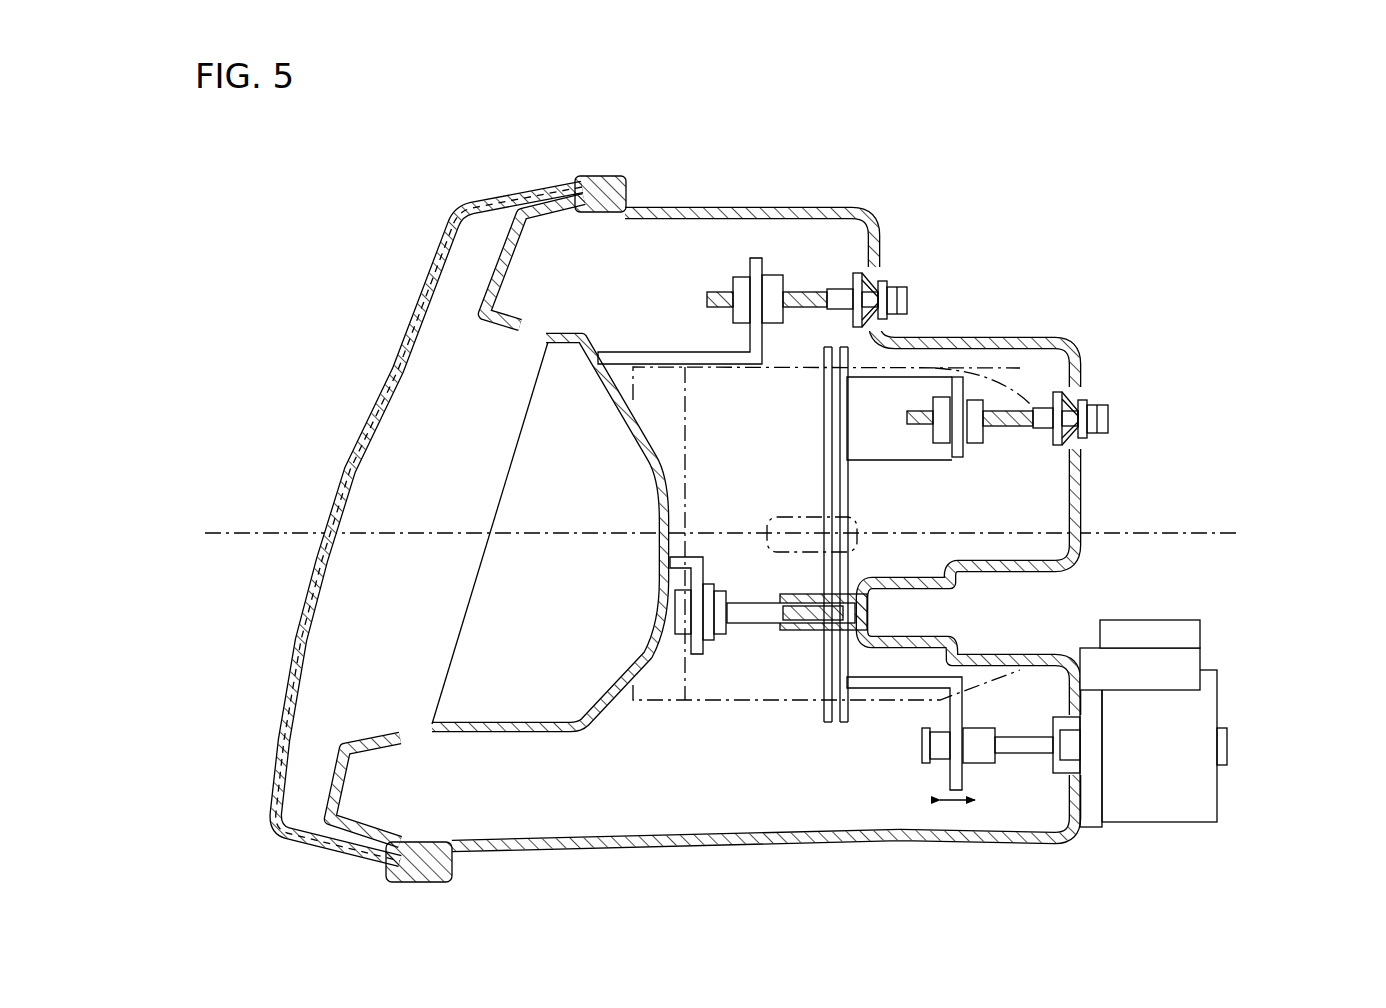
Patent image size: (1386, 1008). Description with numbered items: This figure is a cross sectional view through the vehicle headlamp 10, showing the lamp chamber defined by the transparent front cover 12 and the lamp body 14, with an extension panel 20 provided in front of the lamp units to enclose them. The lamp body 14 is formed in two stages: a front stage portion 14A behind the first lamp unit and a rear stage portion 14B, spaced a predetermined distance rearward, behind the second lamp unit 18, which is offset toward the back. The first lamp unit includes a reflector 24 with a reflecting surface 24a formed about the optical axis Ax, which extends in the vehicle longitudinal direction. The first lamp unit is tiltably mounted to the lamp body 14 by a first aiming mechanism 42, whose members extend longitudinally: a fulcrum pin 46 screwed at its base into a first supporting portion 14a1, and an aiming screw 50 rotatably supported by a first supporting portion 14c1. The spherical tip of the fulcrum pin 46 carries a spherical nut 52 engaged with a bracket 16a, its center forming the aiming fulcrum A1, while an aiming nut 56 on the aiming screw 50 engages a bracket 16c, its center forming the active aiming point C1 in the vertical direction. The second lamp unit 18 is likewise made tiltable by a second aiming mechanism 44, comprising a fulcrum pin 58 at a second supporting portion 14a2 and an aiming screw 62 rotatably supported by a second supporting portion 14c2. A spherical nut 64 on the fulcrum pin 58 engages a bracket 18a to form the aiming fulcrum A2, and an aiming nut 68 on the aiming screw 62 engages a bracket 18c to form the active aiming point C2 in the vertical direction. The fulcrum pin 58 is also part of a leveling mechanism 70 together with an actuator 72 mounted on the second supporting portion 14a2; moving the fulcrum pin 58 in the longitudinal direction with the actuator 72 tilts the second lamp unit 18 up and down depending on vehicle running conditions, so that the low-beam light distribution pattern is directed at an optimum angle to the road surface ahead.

The vehicle headlamp 10 is at (353, 222).
The transparent front cover 12 is at (405, 305).
The lamp body 14 is at (1035, 338).
The front stage portion 14A is at (881, 238).
The rear stage portion 14B is at (1081, 375).
The first supporting portion 14a1 is at (872, 628).
The second supporting portion 14a2 is at (1080, 707).
The first supporting portion 14c1 is at (887, 265).
The second supporting portion 14c2 is at (1085, 452).
The bracket 16a is at (703, 572).
The bracket 16c is at (683, 351).
The second lamp unit 18 is at (715, 705).
The bracket 18a is at (905, 680).
The bracket 18c is at (887, 447).
The extension panel 20 is at (333, 780).
The reflector 24 is at (657, 437).
The reflecting surface 24a is at (648, 472).
The first aiming mechanism 42 is at (755, 735).
The second aiming mechanism 44 is at (898, 790).
The fulcrum pin 46 is at (752, 620).
The aiming screw 50 is at (815, 312).
The spherical nut 52 is at (685, 625).
The aiming nut 56 is at (780, 290).
The fulcrum pin 58 is at (1020, 755).
The aiming screw 62 is at (1008, 430).
The spherical nut 64 is at (985, 760).
The aiming nut 68 is at (977, 402).
The leveling mechanism 70 is at (1218, 748).
The actuator 72 is at (1170, 795).
The aiming fulcrum A1 is at (690, 600).
The aiming fulcrum A2 is at (962, 745).
The active aiming point C1 is at (745, 297).
The active aiming point C2 is at (962, 430).
The optical axis Ax is at (265, 535).